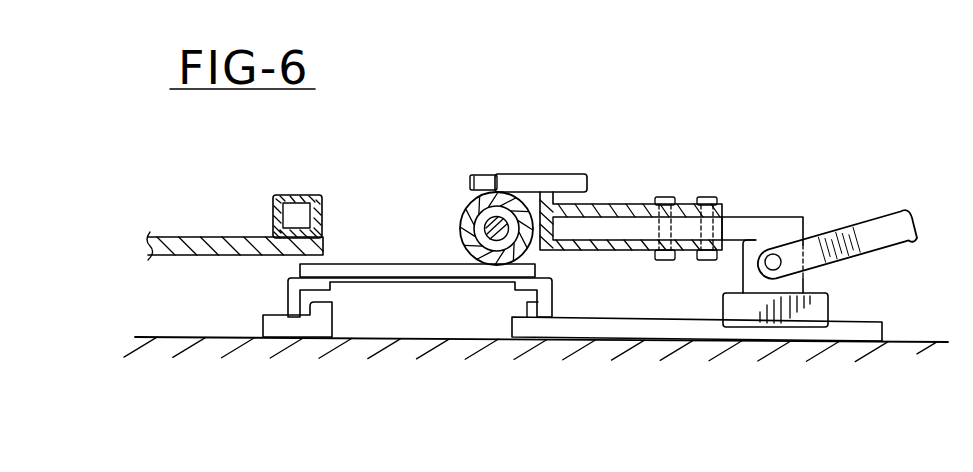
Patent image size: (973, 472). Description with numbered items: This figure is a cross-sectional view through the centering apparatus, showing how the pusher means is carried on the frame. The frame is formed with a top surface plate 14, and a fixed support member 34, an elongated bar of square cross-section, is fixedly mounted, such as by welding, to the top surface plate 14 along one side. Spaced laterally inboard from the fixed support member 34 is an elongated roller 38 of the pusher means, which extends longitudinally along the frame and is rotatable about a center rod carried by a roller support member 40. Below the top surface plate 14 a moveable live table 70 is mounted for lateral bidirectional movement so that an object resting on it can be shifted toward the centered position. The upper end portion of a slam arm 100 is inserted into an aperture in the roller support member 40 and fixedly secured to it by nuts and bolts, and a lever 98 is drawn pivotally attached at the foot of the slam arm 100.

The top surface plate 14 is at (190, 237).
The fixed support member 34 is at (295, 195).
The moveable live table 70 is at (382, 266).
The roller 38 is at (465, 212).
The roller support member 40 is at (623, 205).
The slam arm 100 is at (757, 216).
The lever handle 98 is at (893, 215).